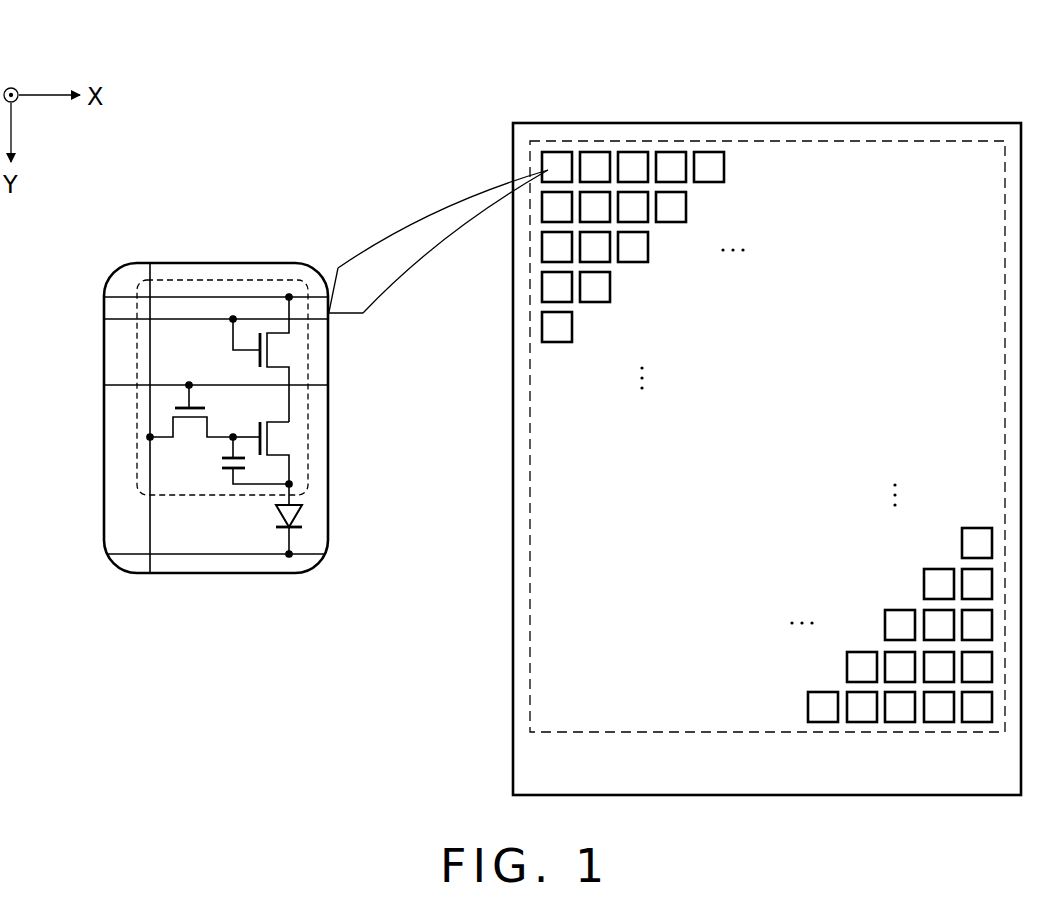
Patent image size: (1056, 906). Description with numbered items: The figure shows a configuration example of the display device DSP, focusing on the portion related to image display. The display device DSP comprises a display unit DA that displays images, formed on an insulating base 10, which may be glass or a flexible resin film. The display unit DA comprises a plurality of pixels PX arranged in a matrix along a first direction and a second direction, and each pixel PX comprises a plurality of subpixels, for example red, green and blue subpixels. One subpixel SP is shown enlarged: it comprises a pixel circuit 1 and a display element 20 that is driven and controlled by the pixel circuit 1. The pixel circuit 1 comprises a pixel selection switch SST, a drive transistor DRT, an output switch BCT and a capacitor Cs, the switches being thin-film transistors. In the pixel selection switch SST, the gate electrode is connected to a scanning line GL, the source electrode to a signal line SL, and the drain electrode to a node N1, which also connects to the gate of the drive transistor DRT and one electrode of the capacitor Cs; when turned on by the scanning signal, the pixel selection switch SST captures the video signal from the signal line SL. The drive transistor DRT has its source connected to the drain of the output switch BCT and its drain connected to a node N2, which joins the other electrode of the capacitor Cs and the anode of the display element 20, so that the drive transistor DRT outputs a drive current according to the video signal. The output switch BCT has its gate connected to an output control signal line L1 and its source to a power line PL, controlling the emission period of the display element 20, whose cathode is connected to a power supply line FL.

The subpixel SP is at (164, 262).
The pixel circuit 1 is at (190, 497).
The signal line SL is at (149, 518).
The power line PL is at (260, 295).
The output control signal line L1 is at (123, 318).
The scanning line GL is at (123, 385).
The power supply line FL is at (250, 557).
The output switch BCT is at (284, 348).
The drive transistor DRT is at (285, 438).
The pixel selection switch SST is at (189, 434).
The capacitor Cs is at (217, 462).
The node N1 is at (234, 431).
The node N2 is at (293, 488).
The display element 20 is at (304, 517).
The base 10 is at (513, 724).
The display unit DA is at (960, 140).
The pixel PX is at (557, 150).
The display device DSP is at (975, 818).